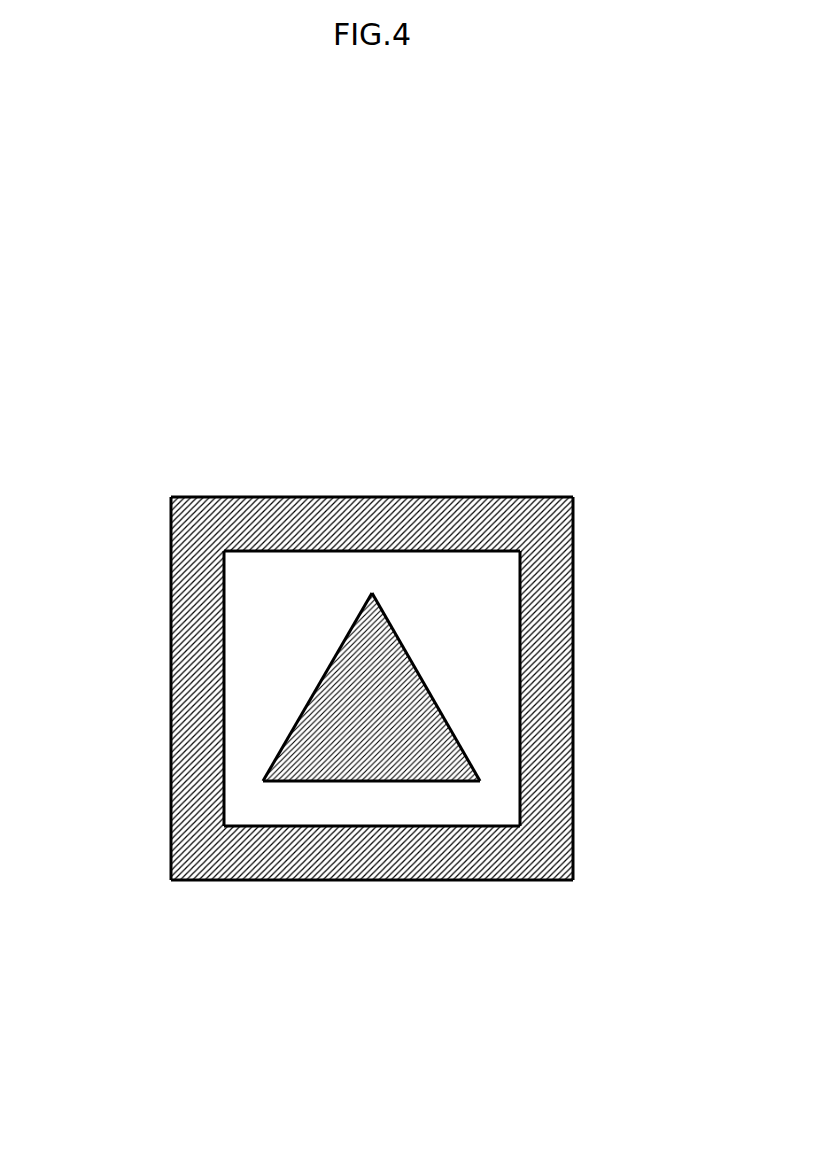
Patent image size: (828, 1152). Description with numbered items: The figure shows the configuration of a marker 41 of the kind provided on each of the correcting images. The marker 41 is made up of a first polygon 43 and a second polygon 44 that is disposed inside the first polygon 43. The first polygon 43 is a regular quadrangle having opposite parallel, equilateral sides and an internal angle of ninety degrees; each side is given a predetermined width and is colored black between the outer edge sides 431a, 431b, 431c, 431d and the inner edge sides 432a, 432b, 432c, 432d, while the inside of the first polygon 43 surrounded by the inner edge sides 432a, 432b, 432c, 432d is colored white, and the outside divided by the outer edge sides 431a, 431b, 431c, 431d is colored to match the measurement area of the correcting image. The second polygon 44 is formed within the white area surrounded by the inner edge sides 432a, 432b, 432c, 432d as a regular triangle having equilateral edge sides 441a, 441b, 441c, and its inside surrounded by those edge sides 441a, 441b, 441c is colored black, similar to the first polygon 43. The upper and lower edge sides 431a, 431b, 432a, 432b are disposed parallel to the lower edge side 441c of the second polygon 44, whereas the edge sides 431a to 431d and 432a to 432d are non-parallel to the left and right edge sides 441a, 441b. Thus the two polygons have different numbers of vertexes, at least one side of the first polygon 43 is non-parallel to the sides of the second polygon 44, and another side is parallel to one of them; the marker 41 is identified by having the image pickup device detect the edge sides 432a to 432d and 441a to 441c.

The marker 41 is at (167, 443).
The first polygon 43 is at (372, 690).
The outer edge side 431a is at (283, 497).
The outer edge side 431b is at (475, 880).
The outer edge side 431c is at (171, 785).
The outer edge side 431d is at (573, 592).
The inner edge side 432a is at (273, 551).
The inner edge side 432b is at (468, 826).
The inner edge side 432c is at (226, 776).
The inner edge side 432d is at (520, 603).
The second polygon 44 is at (374, 752).
The edge side 441a is at (307, 703).
The edge side 441b is at (438, 700).
The edge side 441c is at (370, 781).